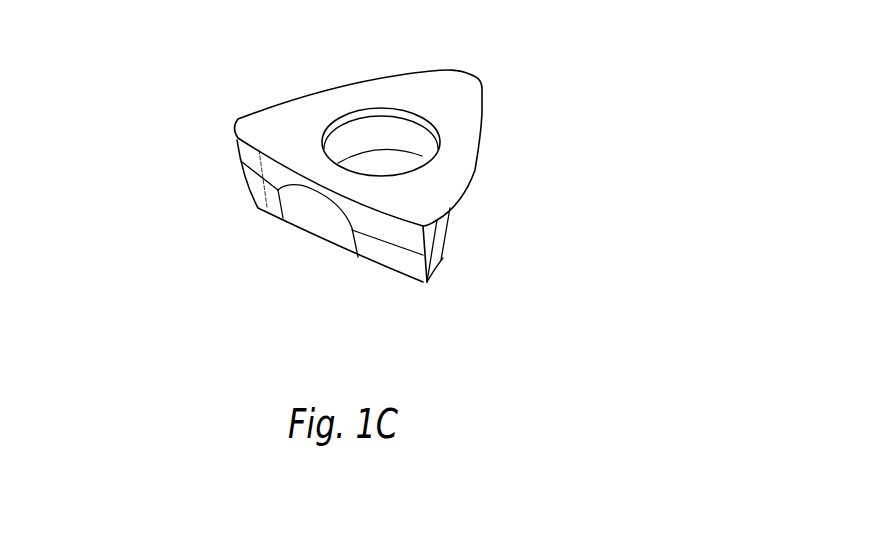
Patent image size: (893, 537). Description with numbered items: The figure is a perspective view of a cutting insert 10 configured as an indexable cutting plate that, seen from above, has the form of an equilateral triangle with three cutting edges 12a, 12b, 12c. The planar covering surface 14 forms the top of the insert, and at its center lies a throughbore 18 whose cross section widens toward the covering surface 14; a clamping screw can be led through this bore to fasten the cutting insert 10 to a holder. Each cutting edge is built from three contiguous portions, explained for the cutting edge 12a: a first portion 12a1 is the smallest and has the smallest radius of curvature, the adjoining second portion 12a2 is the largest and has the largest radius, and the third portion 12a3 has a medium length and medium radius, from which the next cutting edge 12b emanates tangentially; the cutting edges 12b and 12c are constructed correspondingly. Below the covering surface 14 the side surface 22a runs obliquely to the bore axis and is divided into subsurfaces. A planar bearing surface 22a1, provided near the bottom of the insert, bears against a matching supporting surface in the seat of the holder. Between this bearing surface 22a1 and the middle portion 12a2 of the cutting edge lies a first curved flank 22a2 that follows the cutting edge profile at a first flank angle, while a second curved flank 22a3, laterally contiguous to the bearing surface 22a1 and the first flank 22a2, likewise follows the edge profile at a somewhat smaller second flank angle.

The cutting insert 10 is at (541, 76).
The cutting edge 12a is at (289, 161).
The cutting edge 12b is at (351, 83).
The cutting edge 12c is at (477, 171).
The first portion 12a1 is at (440, 259).
The second portion 12a2 is at (336, 208).
The third portion 12a3 is at (253, 160).
The covering surface 14 is at (432, 85).
The throughbore 18 is at (417, 144).
The side surface 22a is at (265, 218).
The planar bearing surface 22a1 is at (299, 216).
The first curved flank 22a2 is at (262, 195).
The second flank 22a3 is at (262, 198).